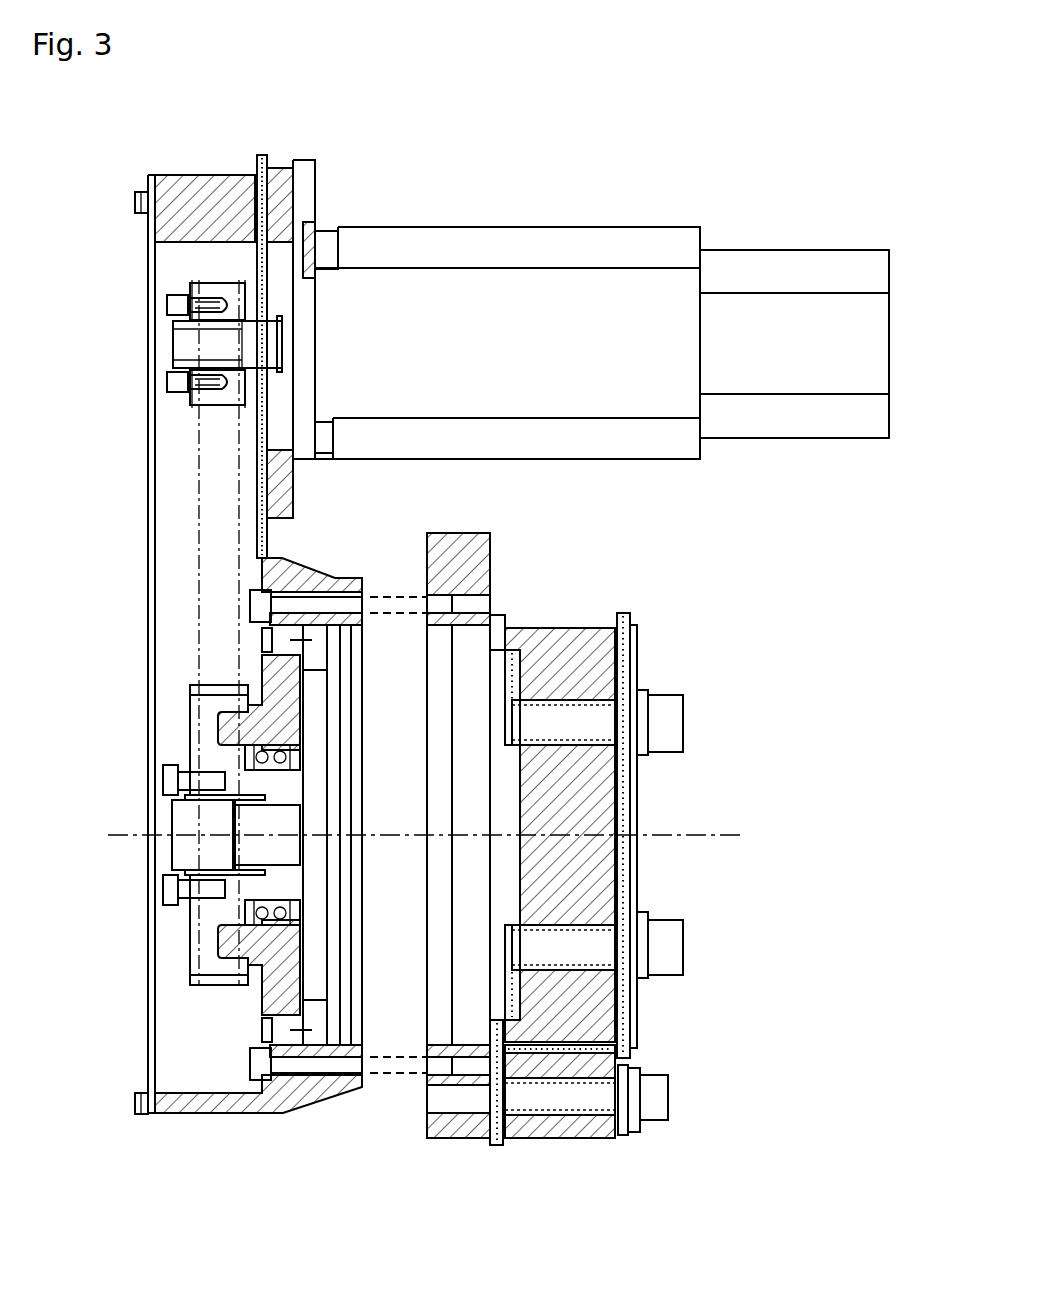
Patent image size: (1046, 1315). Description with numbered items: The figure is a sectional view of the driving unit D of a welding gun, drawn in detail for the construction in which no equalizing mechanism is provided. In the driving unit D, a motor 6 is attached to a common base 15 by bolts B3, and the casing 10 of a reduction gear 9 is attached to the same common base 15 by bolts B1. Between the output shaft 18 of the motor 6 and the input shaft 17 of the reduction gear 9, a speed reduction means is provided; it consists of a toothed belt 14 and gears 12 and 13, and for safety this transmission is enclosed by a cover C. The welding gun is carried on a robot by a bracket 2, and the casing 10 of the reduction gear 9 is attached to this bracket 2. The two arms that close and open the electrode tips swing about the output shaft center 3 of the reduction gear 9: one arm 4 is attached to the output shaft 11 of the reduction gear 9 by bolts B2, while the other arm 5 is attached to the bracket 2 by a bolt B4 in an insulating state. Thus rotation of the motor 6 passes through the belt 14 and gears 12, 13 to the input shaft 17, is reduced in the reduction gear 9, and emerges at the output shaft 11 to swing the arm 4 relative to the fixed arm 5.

The bracket 2 is at (478, 555).
The output shaft center 3 is at (708, 836).
The arm 4 is at (563, 630).
The arm 5 is at (525, 1135).
The motor 6 is at (455, 240).
The reduction gear 9 is at (340, 1072).
The casing 10 is at (397, 920).
The output shaft 11 is at (500, 990).
The gear 12 is at (208, 717).
The gear 13 is at (228, 392).
The toothed belt 14 is at (198, 537).
The common base 15 is at (268, 538).
The input shaft 17 is at (253, 830).
The output shaft 18 is at (210, 335).
The bolt B1 is at (372, 585).
The bolt B2 is at (667, 723).
The bolt B3 is at (325, 240).
The bolt B4 is at (653, 1098).
The cover C is at (150, 1027).
The driving unit D is at (478, 108).